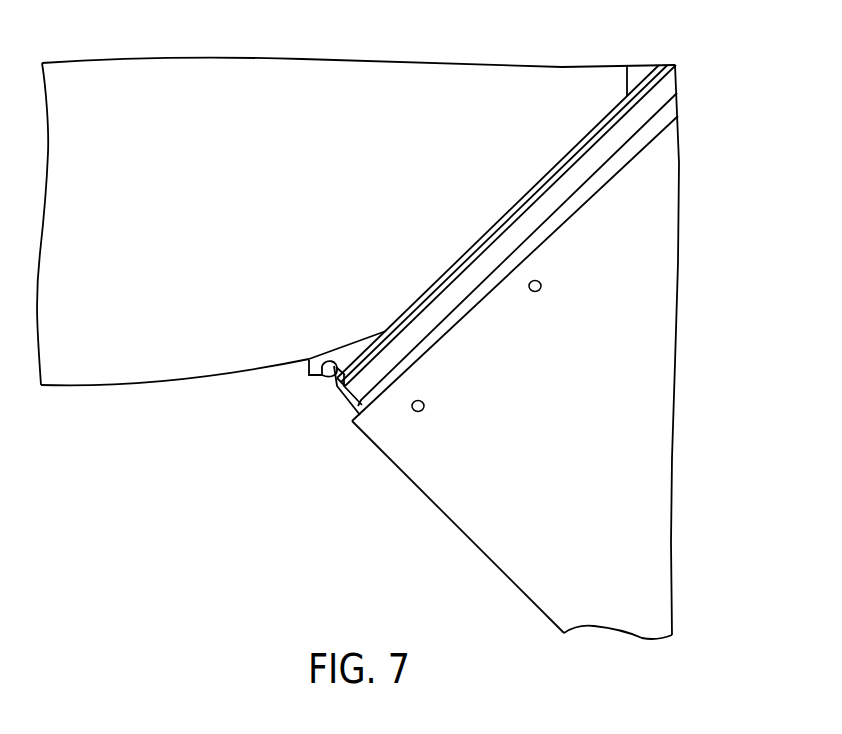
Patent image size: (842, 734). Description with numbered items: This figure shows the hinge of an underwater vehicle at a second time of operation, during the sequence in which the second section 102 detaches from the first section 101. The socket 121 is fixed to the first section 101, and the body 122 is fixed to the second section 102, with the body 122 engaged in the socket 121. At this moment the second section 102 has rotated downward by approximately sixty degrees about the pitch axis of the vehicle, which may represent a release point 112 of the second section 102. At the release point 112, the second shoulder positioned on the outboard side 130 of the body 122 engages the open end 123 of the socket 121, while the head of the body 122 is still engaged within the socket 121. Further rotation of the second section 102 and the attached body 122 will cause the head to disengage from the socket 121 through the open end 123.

The first section 101 is at (136, 377).
The second section 102 is at (464, 533).
The release point 112 is at (246, 478).
The socket 121 is at (301, 367).
The body 122 is at (349, 395).
The open end 123 is at (312, 373).
The outboard side 130 is at (316, 380).